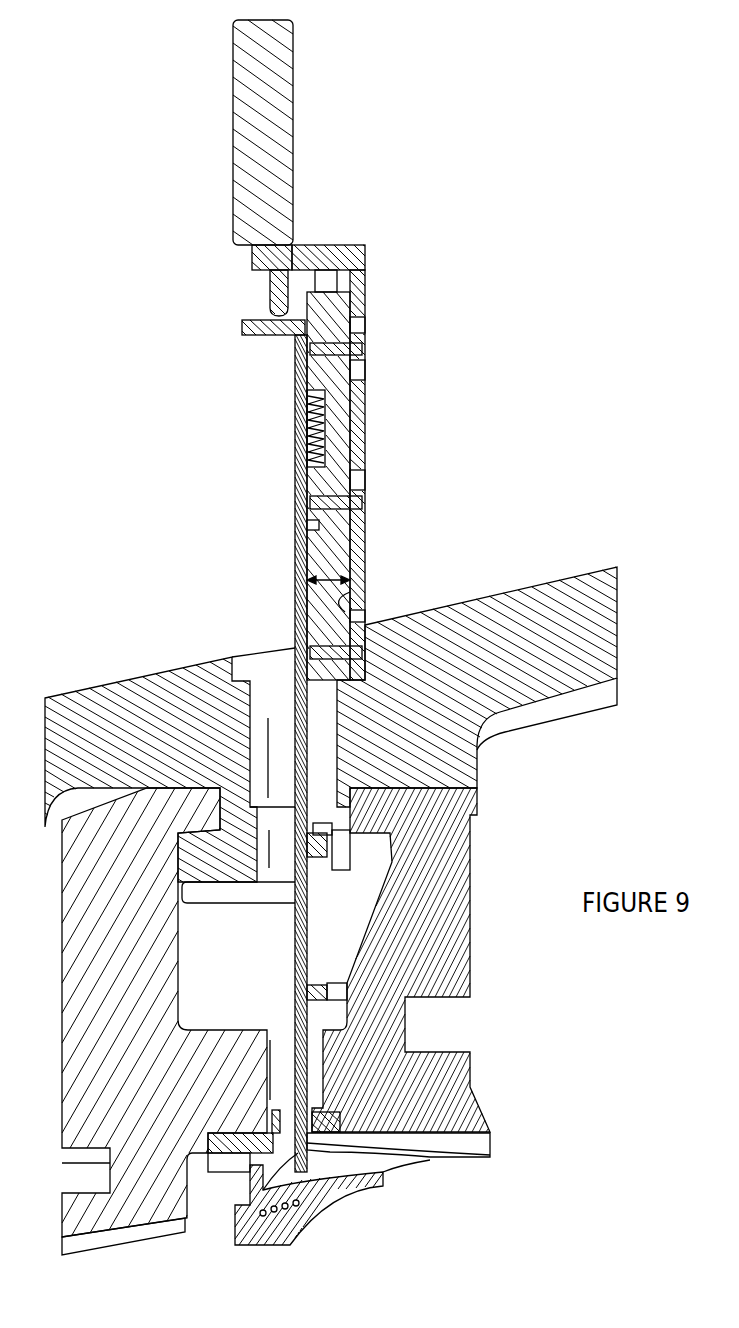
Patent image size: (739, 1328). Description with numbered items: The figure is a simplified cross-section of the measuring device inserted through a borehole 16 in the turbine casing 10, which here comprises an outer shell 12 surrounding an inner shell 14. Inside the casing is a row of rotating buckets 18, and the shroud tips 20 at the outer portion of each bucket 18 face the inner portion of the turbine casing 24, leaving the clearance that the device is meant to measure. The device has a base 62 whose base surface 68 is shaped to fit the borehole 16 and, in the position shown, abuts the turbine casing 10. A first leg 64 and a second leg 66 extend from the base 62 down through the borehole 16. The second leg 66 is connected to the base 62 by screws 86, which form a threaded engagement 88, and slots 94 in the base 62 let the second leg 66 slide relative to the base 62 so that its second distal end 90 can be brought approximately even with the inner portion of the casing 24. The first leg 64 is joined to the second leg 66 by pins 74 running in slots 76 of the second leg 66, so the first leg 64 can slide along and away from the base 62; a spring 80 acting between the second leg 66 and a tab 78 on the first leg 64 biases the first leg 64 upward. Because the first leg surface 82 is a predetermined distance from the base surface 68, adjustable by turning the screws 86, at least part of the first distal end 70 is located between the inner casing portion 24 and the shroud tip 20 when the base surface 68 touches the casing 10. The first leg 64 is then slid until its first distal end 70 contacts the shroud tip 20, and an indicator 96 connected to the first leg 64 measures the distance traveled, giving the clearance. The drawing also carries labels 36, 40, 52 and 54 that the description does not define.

The turbine casing 10 is at (639, 584).
The outer shell 12 is at (513, 590).
The inner shell 14 is at (62, 1085).
The borehole 16 is at (243, 655).
The bucket 18 is at (253, 1240).
The shroud tip 20 is at (383, 1165).
The inner portion of the turbine casing 24 is at (395, 1133).
The passage 36 is at (366, 580).
The seal surface 40 is at (390, 1158).
The bore 52 is at (350, 604).
The plate 54 is at (305, 345).
The base 62 is at (367, 421).
The first leg 64 is at (302, 580).
The second leg 66 is at (317, 295).
The base surface 68 is at (366, 568).
The first distal end 70 is at (257, 1207).
The pins 74 is at (405, 852).
The slots 76 is at (340, 858).
The tab 78 is at (305, 398).
The spring 80 is at (310, 455).
The first leg surface 82 is at (300, 643).
The screws 86 is at (365, 500).
The threaded engagement 88 is at (312, 525).
The second distal end 90 is at (330, 1120).
The slots 94 is at (360, 370).
The indicator 96 is at (293, 98).